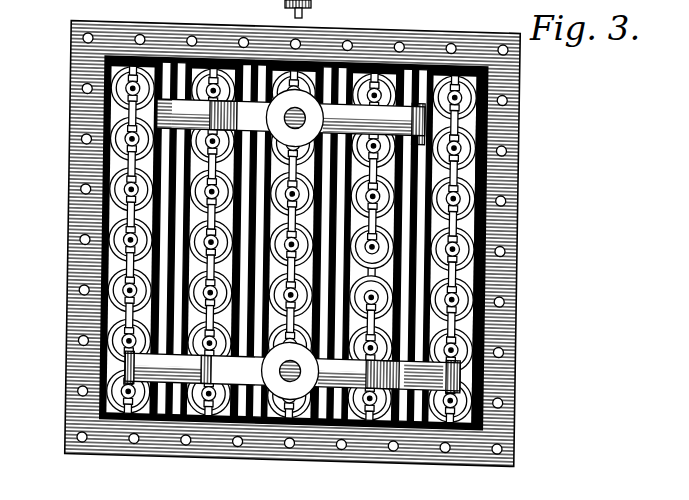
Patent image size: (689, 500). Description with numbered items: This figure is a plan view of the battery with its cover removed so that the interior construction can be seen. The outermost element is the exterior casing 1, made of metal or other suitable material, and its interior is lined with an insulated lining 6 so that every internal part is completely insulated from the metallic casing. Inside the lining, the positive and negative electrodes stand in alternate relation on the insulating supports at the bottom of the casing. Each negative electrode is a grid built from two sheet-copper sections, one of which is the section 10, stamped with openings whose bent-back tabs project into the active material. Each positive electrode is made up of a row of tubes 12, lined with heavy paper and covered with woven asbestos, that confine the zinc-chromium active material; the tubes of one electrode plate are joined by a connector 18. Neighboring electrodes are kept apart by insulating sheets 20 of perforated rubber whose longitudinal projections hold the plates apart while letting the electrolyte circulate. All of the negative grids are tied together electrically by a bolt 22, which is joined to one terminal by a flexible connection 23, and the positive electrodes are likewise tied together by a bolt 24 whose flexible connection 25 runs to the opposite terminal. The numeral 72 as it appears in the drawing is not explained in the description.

The exterior casing 1 is at (508, 422).
The insulated lining 6 is at (484, 286).
The grid section 10 is at (476, 173).
The tube 12 is at (475, 113).
The connector 18 is at (189, 196).
The insulating sheet 20 is at (472, 220).
The bolt 22 is at (205, 378).
The flexible connection 23 is at (365, 376).
The bolt 24 is at (380, 110).
The flexible connection 25 is at (231, 114).
The hub 72 is at (126, 296).